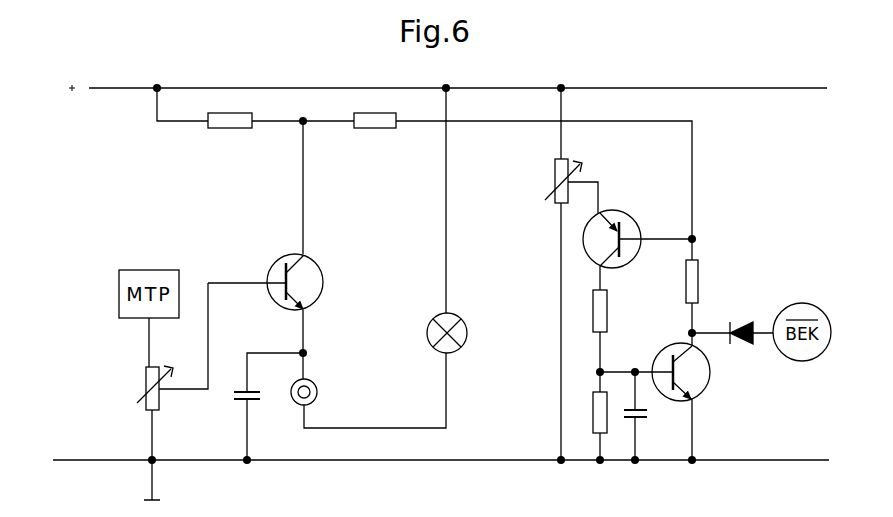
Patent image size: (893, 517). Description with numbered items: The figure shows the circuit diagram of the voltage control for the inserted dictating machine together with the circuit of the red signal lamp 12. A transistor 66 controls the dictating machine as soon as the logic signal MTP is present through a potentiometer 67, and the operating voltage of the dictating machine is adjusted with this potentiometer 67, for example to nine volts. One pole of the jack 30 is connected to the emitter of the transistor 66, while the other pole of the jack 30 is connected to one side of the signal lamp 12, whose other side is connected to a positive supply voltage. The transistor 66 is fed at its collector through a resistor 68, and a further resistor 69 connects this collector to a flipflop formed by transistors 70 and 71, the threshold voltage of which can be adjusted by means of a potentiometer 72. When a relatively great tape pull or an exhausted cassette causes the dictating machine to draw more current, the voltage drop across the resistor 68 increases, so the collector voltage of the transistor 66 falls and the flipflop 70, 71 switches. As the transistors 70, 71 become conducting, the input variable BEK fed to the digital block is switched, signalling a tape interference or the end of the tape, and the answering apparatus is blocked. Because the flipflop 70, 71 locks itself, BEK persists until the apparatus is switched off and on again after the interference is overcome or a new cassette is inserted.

The signal lamp 12 is at (434, 318).
The jack 30 is at (318, 388).
The transistor 66 is at (319, 263).
The potentiometer 67 is at (141, 386).
The resistor 68 is at (226, 129).
The further resistor 69 is at (371, 129).
The transistor 70 is at (638, 219).
The transistor 71 is at (710, 380).
The potentiometer 72 is at (553, 175).